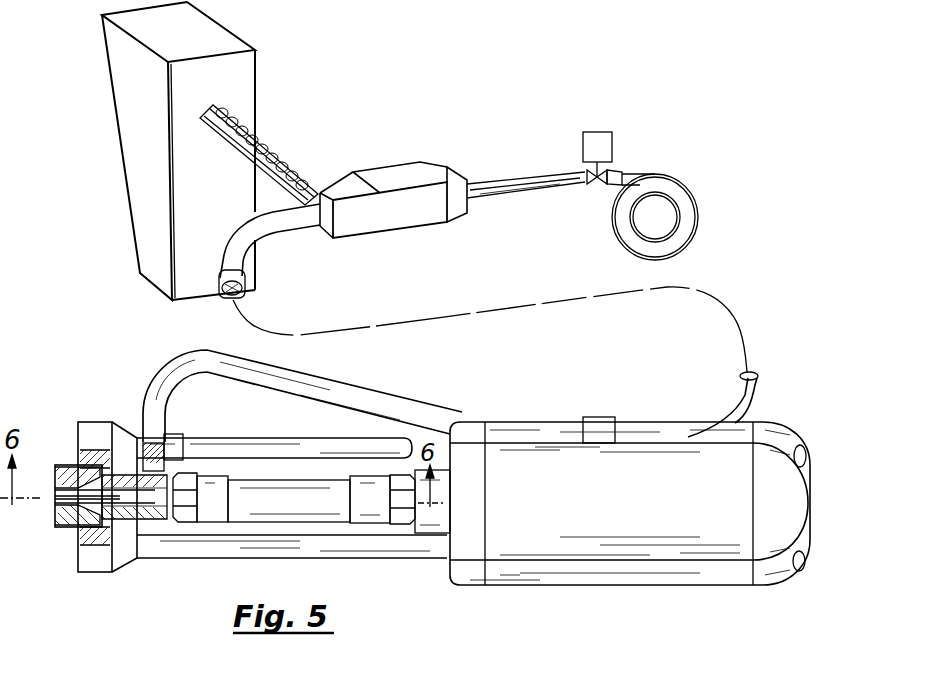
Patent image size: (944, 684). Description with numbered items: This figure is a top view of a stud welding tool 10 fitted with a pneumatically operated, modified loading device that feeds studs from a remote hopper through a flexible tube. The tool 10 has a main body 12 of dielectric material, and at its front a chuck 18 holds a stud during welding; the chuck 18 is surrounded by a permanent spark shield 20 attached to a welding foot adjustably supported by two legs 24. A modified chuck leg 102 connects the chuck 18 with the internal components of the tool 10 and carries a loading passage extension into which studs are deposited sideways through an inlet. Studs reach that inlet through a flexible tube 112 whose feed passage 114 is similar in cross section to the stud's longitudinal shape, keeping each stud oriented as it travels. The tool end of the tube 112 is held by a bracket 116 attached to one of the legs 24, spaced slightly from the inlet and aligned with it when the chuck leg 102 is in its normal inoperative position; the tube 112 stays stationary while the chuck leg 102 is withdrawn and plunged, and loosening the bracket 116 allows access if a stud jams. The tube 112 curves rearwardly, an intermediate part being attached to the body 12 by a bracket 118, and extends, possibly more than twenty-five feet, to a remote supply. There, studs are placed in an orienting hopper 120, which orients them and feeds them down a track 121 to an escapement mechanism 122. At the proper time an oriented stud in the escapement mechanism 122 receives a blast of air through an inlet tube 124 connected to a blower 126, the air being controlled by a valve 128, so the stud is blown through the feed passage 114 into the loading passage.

The stud welding tool 10 is at (527, 585).
The main body 12 is at (599, 585).
The chuck 18 is at (62, 490).
The permanent spark shield 20 is at (62, 528).
The legs 24 is at (228, 437).
The chuck leg 102 is at (264, 479).
The flexible tube 112 is at (193, 325).
The feed passage 114 is at (250, 282).
The bracket 116 is at (178, 434).
The bracket 118 is at (600, 417).
The orienting hopper 120 is at (258, 68).
The track 121 is at (247, 158).
The escapement mechanism 122 is at (405, 229).
The inlet tube 124 is at (620, 172).
The blower 126 is at (690, 186).
The valve 128 is at (601, 185).